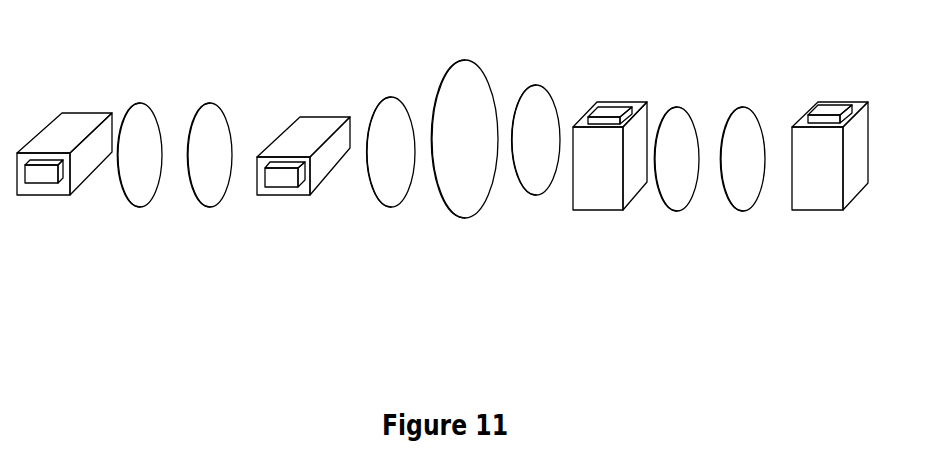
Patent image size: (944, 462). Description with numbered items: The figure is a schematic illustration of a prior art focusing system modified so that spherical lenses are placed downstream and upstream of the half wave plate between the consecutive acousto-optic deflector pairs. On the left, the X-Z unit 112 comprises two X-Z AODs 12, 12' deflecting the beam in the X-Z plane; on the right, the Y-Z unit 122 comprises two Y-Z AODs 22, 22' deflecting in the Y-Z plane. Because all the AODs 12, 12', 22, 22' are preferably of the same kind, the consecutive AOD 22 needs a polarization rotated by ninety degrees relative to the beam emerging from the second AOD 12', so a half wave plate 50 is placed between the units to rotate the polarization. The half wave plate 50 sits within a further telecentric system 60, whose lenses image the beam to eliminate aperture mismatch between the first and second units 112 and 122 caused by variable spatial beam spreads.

The X-Z AOD 12 is at (72, 117).
The second X-Z AOD 12' is at (303, 120).
The X-Z unit 112 is at (183, 165).
The telecentric system 60 is at (463, 163).
The half wave plate 50 is at (465, 227).
The Y-Z AOD 22 is at (622, 128).
The second Y-Z AOD 22' is at (818, 128).
The Y-Z unit 122 is at (720, 174).